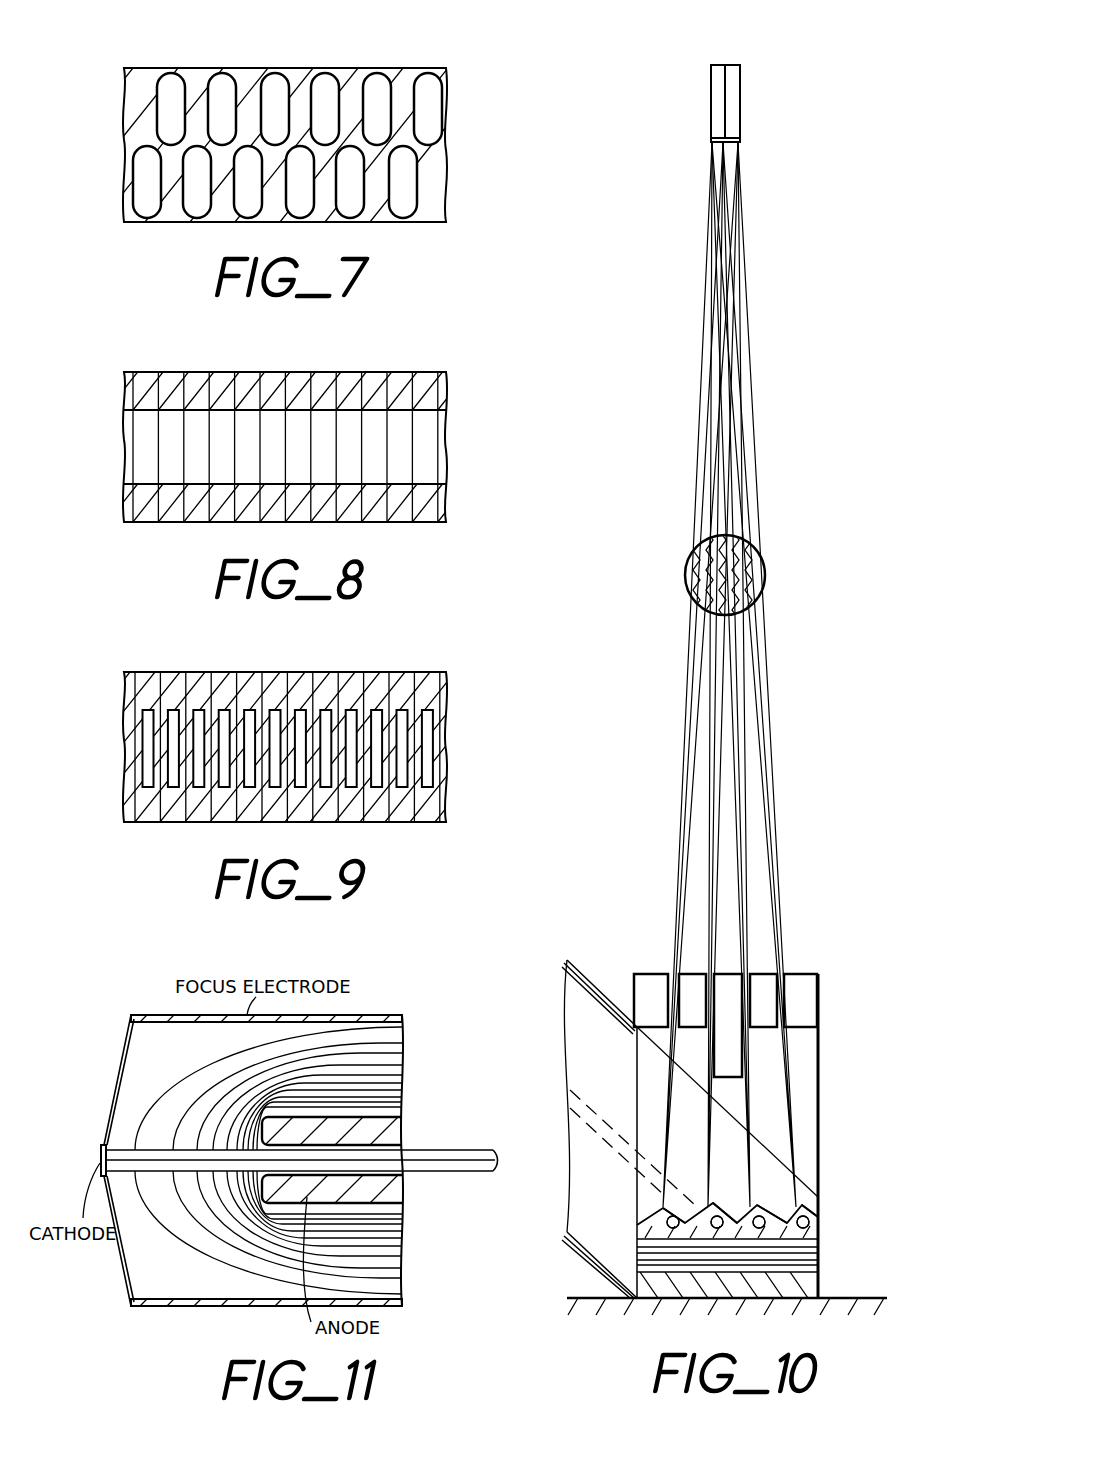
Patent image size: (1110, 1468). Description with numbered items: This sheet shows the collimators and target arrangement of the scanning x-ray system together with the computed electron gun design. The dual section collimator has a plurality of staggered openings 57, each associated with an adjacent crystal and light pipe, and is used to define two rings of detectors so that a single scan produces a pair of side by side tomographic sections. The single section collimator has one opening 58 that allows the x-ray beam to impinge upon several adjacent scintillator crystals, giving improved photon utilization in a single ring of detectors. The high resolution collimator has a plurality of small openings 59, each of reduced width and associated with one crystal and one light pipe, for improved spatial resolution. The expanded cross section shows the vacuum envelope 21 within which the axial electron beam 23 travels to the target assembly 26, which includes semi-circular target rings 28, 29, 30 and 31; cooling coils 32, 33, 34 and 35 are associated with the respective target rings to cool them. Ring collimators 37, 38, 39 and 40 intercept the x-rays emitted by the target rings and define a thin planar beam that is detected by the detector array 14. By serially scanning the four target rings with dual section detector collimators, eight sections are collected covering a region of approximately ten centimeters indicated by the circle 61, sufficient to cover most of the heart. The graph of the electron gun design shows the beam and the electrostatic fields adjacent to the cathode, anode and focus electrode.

In FIG. 10, the detector array 14 is at (709, 112).
In FIG. 10, the vacuum envelope 21 is at (580, 1031).
In FIG. 10, the axial electron beam 23 is at (602, 1130).
In FIG. 10, the target assembly 26 is at (653, 1207).
In FIG. 10, the semi-circular target ring 28 is at (663, 1209).
In FIG. 10, the semi-circular target ring 29 is at (713, 1204).
In FIG. 10, the semi-circular target ring 30 is at (756, 1205).
In FIG. 10, the semi-circular target ring 31 is at (798, 1198).
In FIG. 10, the cooling coil 32 is at (673, 1229).
In FIG. 10, the cooling coil 33 is at (717, 1229).
In FIG. 10, the cooling coil 34 is at (759, 1229).
In FIG. 10, the cooling coil 35 is at (803, 1229).
In FIG. 10, the ring collimator 37 is at (651, 993).
In FIG. 10, the ring collimator 38 is at (691, 988).
In FIG. 10, the ring collimator 39 is at (760, 990).
In FIG. 10, the ring collimator 40 is at (802, 990).
In FIG. 7, the staggered openings 57 is at (432, 100).
In FIG. 8, the opening 58 is at (424, 440).
In FIG. 9, the small openings 59 is at (428, 747).
In FIG. 10, the circle 61 is at (686, 573).